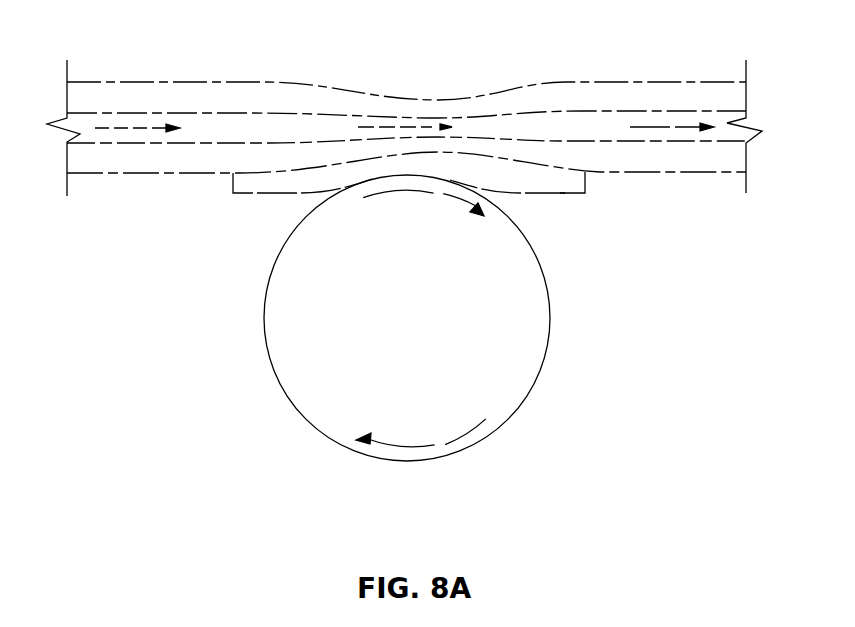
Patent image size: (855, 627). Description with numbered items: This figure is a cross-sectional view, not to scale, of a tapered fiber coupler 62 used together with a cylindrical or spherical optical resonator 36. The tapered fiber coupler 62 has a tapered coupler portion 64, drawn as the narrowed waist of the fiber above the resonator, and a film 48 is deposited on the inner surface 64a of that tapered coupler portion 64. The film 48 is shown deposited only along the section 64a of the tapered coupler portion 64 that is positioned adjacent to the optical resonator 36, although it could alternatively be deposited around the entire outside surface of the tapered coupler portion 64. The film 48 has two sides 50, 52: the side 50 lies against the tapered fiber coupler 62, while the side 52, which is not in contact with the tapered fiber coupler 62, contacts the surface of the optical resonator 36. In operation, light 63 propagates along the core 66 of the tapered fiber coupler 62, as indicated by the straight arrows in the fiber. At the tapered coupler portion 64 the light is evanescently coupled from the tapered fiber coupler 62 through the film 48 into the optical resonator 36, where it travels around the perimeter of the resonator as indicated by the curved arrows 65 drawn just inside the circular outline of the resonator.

The cylindrical or spherical optical resonator 36 is at (552, 323).
The film 48 is at (586, 183).
The side of the film 50 is at (270, 170).
The side of the film 52 is at (526, 183).
The tapered fiber coupler 62 is at (112, 73).
The light 63 is at (120, 128).
The tapered coupler portion 64 is at (446, 79).
The inner surface section of the tapered coupler portion 64a is at (398, 152).
The curved arrows 65 is at (445, 452).
The core 66 is at (140, 117).